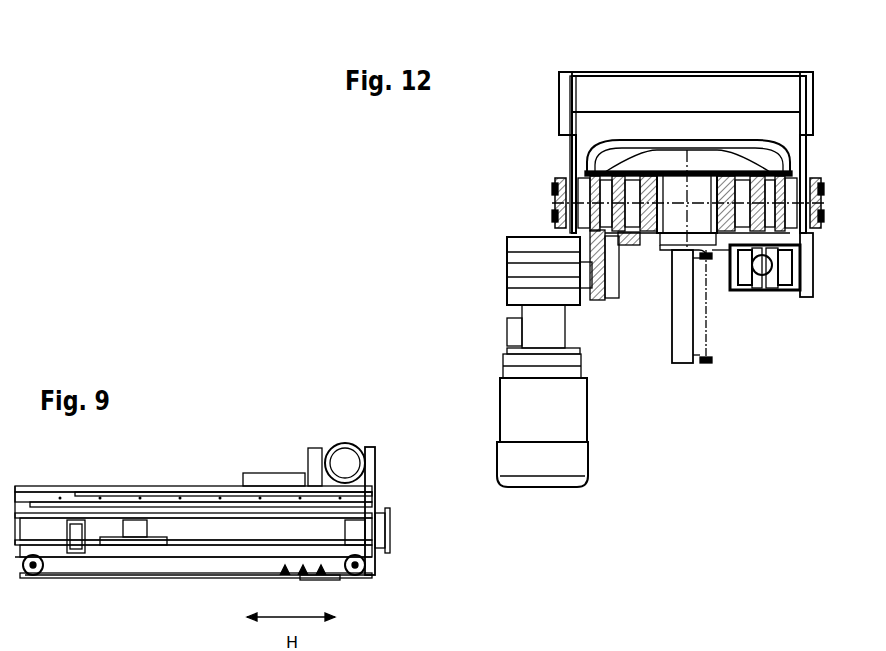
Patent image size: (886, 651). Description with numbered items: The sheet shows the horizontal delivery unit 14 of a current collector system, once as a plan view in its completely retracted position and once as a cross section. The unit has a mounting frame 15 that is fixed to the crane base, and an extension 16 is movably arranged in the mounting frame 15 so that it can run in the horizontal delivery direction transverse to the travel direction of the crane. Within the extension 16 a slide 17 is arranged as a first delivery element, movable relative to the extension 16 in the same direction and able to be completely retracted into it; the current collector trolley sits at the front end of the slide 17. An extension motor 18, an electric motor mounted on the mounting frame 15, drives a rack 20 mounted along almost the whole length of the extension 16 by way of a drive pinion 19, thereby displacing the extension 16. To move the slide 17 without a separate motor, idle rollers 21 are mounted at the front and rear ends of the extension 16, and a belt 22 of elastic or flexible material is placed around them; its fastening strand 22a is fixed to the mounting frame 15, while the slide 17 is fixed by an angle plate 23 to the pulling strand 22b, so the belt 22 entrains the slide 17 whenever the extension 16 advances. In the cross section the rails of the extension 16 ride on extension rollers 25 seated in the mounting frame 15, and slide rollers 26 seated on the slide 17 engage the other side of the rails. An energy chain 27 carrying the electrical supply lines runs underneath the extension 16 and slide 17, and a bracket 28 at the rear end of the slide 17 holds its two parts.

In FIG. 9, the horizontal delivery unit 14 is at (385, 445).
In FIG. 12, the mounting frame 15 is at (559, 110).
In FIG. 9, the mounting frame 15 is at (262, 473).
In FIG. 9, the extension 16 is at (185, 486).
In FIG. 12, the slide 17 is at (687, 172).
In FIG. 9, the slide 17 is at (390, 515).
In FIG. 12, the extension motor 18 is at (590, 445).
In FIG. 9, the extension motor 18 is at (345, 443).
In FIG. 12, the drive pinion 19 is at (600, 300).
In FIG. 9, the drive pinion 19 is at (376, 490).
In FIG. 12, the rack 20 is at (614, 252).
In FIG. 9, the rack 20 is at (138, 492).
In FIG. 9, the idle rollers 21 is at (33, 576).
In FIG. 9, the belt 22 is at (210, 578).
In FIG. 12, the fastening strand 22a is at (780, 292).
In FIG. 9, the fastening strand 22a is at (167, 578).
In FIG. 12, the pulling strand 22b is at (748, 292).
In FIG. 9, the pulling strand 22b is at (130, 545).
In FIG. 12, the angle plate 23 is at (725, 292).
In FIG. 9, the angle plate 23 is at (75, 555).
In FIG. 12, the extension rollers 25 is at (565, 182).
In FIG. 12, the slide rollers 26 is at (790, 170).
In FIG. 12, the energy chain 27 is at (677, 365).
In FIG. 12, the bracket 28 is at (705, 365).